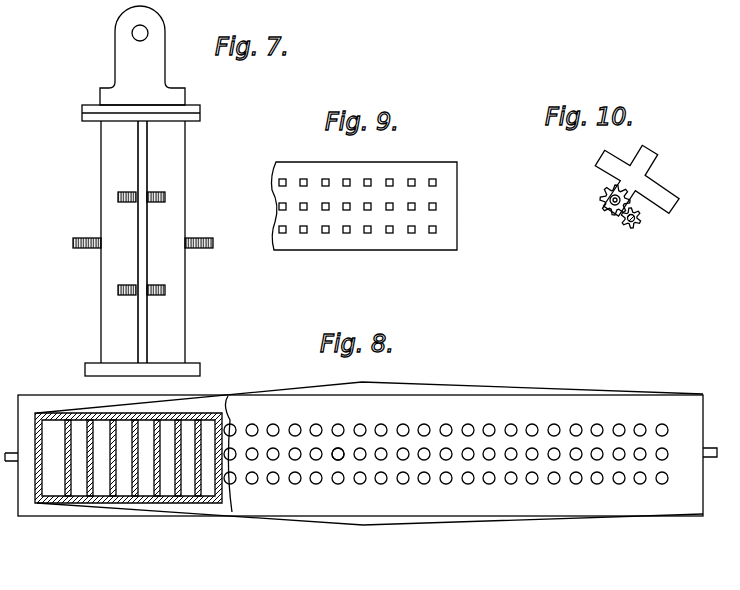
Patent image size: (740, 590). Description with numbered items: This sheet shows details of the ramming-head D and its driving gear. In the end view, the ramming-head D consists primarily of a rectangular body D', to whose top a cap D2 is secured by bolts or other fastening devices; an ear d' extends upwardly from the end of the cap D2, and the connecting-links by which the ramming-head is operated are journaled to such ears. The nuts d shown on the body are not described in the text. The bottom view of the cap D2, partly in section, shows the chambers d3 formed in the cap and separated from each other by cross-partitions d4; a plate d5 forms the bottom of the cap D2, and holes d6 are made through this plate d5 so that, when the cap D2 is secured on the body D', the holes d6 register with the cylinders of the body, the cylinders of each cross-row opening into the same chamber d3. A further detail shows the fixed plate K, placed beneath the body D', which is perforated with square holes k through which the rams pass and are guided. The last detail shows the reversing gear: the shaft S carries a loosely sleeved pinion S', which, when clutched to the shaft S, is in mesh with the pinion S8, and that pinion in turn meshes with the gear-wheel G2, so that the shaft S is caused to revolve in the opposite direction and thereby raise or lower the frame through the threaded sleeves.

In FIG. 7, the ramming-head D is at (151, 240).
In FIG. 7, the cap D2 is at (128, 55).
In FIG. 8, the cap D2 is at (105, 541).
In FIG. 7, the ears d' is at (138, 50).
In FIG. 7, the rectangular body D' is at (156, 242).
In FIG. 7, the nut / hole d is at (134, 243).
In FIG. 8, the nut / hole d is at (343, 477).
In FIG. 9, the fixed plate K is at (400, 158).
In FIG. 9, the square holes k is at (304, 180).
In FIG. 10, the gear-wheel G2 is at (637, 176).
In FIG. 10, the pinion S8 is at (602, 197).
In FIG. 10, the shaft S is at (613, 225).
In FIG. 10, the pinion S' is at (649, 237).
In FIG. 8, the chambers d3 is at (50, 430).
In FIG. 8, the cross-partitions d4 is at (68, 470).
In FIG. 8, the plate d5 is at (380, 451).
In FIG. 8, the holes d6 is at (275, 429).